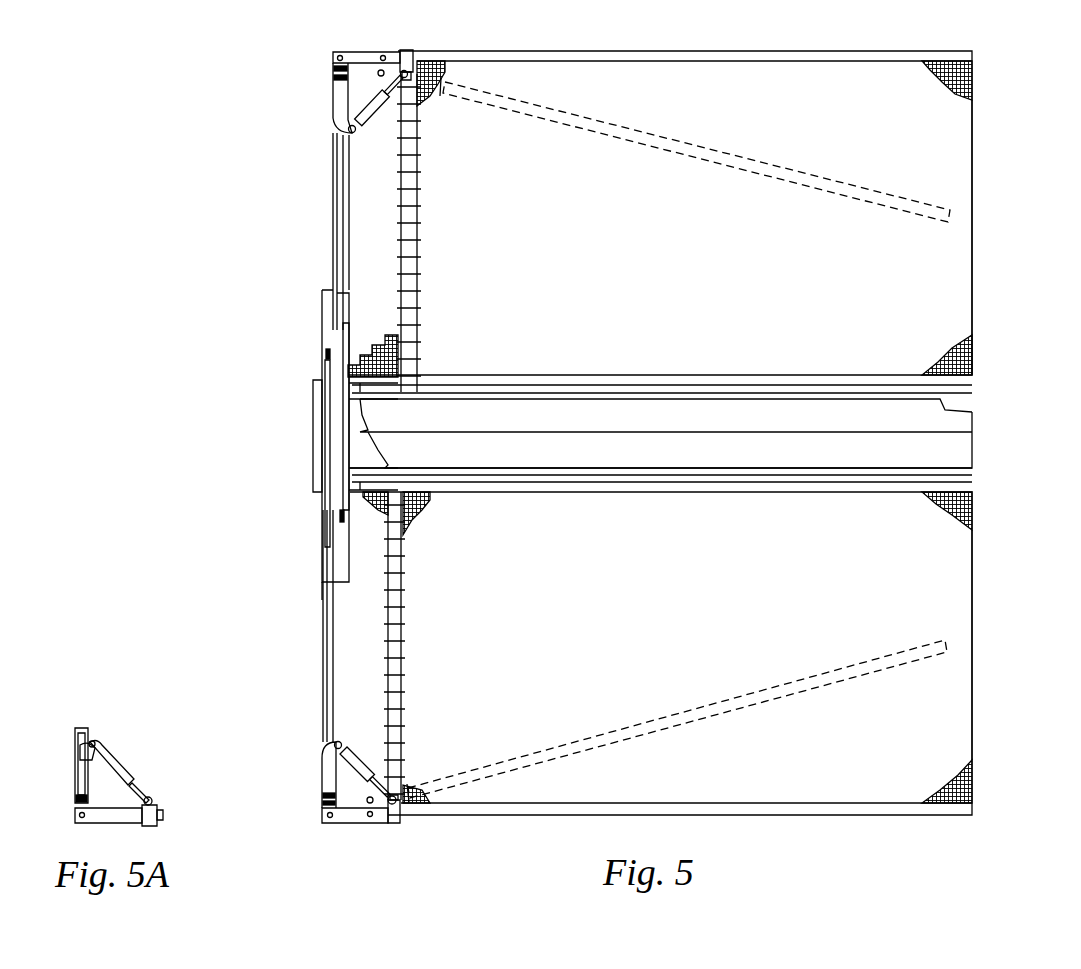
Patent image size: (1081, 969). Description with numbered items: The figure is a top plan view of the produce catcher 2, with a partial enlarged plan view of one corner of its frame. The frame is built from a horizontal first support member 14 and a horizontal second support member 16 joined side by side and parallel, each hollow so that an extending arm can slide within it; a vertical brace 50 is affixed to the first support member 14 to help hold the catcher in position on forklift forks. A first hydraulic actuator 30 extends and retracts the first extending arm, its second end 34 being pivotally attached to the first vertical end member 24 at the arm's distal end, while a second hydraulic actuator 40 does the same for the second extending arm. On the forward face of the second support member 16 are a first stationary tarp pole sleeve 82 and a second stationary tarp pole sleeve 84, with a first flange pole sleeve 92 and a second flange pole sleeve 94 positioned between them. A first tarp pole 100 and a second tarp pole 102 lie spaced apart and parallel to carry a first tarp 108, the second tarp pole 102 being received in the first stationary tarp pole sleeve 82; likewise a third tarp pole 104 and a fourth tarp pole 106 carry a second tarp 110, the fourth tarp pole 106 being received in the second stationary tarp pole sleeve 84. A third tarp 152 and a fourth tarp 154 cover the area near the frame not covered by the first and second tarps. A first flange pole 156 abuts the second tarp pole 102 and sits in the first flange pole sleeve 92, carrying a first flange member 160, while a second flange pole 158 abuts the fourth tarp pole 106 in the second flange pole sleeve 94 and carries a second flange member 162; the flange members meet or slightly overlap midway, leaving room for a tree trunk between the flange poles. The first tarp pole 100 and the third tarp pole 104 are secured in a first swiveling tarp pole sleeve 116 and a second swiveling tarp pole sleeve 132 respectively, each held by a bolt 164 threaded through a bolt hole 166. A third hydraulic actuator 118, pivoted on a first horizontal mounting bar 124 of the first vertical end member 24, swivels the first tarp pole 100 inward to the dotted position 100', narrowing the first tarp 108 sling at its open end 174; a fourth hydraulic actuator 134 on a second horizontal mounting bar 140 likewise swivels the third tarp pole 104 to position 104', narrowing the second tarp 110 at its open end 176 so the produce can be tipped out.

In FIG. 5, the produce catcher 2 is at (200, 417).
In FIG. 5, the first support member 14 is at (323, 318).
In FIG. 5, the second support member 16 is at (340, 562).
In FIG. 5A, the first vertical end member 24 is at (78, 802).
In FIG. 5, the first hydraulic actuator 30 is at (325, 520).
In FIG. 5A, the first hydraulic actuator 30 is at (82, 740).
In FIG. 5A, the second end 34 is at (78, 776).
In FIG. 5, the second hydraulic actuator 40 is at (343, 365).
In FIG. 5, the vertical brace 50 is at (314, 440).
In FIG. 5, the first stationary tarp pole sleeve 82 is at (355, 490).
In FIG. 5, the second stationary tarp pole sleeve 84 is at (350, 383).
In FIG. 5, the first flange pole sleeve 92 is at (355, 468).
In FIG. 5, the second flange pole sleeve 94 is at (355, 399).
In FIG. 5, the first tarp pole 100 is at (661, 666).
In FIG. 5, the inward swiveled position of first tarp pole 100' is at (677, 721).
In FIG. 5, the second tarp pole 102 is at (565, 490).
In FIG. 5, the third tarp pole 104 is at (660, 200).
In FIG. 5, the inward swiveled position of third tarp pole 104' is at (695, 150).
In FIG. 5, the fourth tarp pole 106 is at (598, 378).
In FIG. 5, the first tarp 108 is at (636, 610).
In FIG. 5, the second tarp 110 is at (587, 221).
In FIG. 5, the first swiveling tarp pole sleeve 116 is at (352, 818).
In FIG. 5A, the first swiveling tarp pole sleeve 116 is at (108, 820).
In FIG. 5, the third hydraulic actuator 118 is at (360, 757).
In FIG. 5A, the third hydraulic actuator 118 is at (110, 751).
In FIG. 5, the first horizontal mounting bar 124 is at (333, 776).
In FIG. 5A, the first horizontal mounting bar 124 is at (80, 741).
In FIG. 5, the second swiveling tarp pole sleeve 132 is at (370, 56).
In FIG. 5, the fourth hydraulic actuator 134 is at (350, 118).
In FIG. 5, the second horizontal mounting bar 140 is at (340, 100).
In FIG. 5, the third tarp 152 is at (371, 668).
In FIG. 5, the fourth tarp 154 is at (391, 236).
In FIG. 5, the first flange pole 156 is at (700, 470).
In FIG. 5, the second flange pole 158 is at (720, 395).
In FIG. 5, the first flange member 160 is at (598, 455).
In FIG. 5, the second flange member 162 is at (576, 421).
In FIG. 5, the bolt 164 is at (378, 75).
In FIG. 5, the bolt hole 166 is at (390, 50).
In FIG. 5, the open end of first tarp 174 is at (978, 612).
In FIG. 5, the open end of second tarp 176 is at (978, 255).